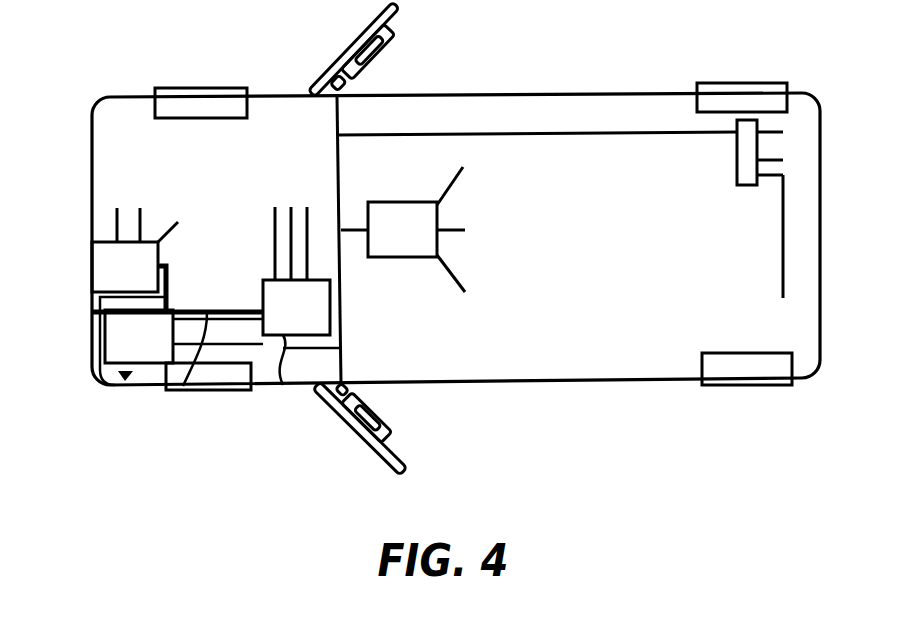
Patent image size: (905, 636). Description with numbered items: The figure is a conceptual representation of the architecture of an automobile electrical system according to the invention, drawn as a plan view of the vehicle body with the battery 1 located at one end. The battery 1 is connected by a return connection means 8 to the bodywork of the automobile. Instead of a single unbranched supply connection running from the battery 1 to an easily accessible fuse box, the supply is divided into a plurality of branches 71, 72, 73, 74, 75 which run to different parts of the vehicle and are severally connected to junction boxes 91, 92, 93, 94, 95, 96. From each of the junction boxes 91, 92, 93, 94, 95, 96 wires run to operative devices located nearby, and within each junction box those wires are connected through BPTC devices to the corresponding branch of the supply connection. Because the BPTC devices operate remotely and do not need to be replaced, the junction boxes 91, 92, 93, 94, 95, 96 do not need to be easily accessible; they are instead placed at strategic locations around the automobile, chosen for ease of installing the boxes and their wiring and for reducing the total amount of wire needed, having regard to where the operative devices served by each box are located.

The battery 1 is at (102, 350).
The return connection means 8 is at (102, 382).
The branch 71 is at (166, 258).
The branch 72 is at (200, 398).
The branch 73 is at (300, 392).
The branch 74 is at (345, 366).
The branch 75 is at (340, 268).
The junction box 91 is at (92, 283).
The junction box 92 is at (262, 300).
The junction box 93 is at (387, 412).
The junction box 94 is at (405, 200).
The junction box 95 is at (378, 62).
The junction box 96 is at (737, 160).